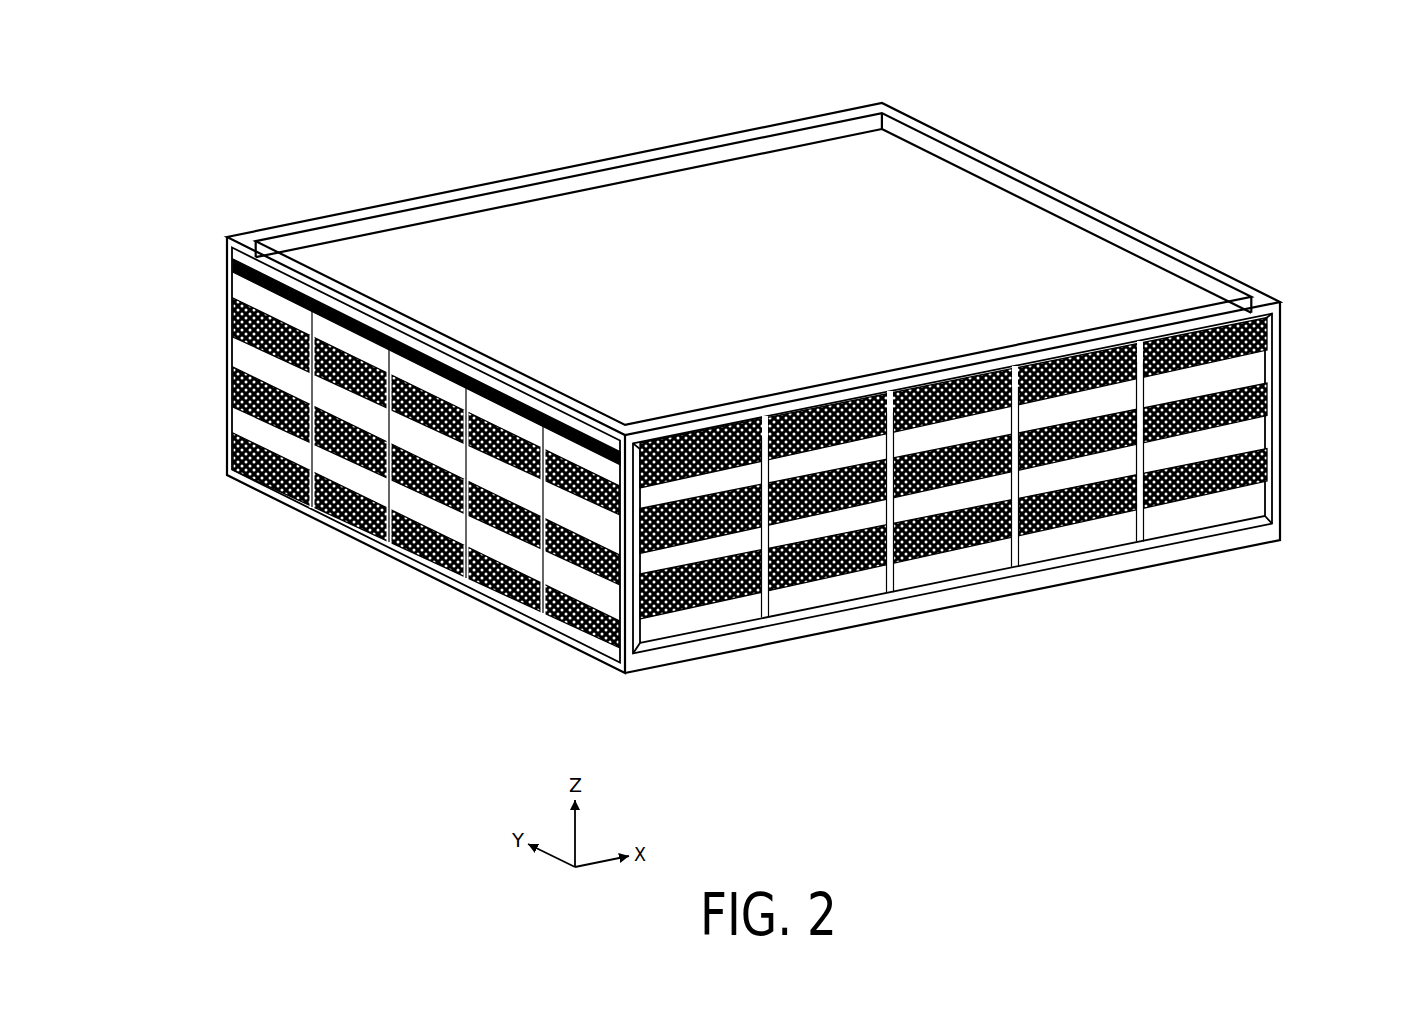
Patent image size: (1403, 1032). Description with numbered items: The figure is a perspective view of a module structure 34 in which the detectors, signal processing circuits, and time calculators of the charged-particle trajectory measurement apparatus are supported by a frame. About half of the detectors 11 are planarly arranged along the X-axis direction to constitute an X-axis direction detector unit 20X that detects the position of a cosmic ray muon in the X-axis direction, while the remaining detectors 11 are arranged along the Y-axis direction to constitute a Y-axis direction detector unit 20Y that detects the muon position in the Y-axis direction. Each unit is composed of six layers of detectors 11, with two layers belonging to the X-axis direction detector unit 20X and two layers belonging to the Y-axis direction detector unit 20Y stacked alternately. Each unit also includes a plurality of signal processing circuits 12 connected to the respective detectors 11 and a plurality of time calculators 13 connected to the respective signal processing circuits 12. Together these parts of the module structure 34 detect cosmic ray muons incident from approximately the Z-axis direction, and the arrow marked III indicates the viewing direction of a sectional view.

The detector 11 is at (728, 428).
The signal processing circuit 12 is at (728, 428).
The time calculator 13 is at (752, 420).
The module structure 34 is at (715, 101).
The X-axis direction detector unit 20X is at (1056, 717).
The Y-axis direction detector unit 20Y is at (333, 688).
The section view direction III is at (268, 636).